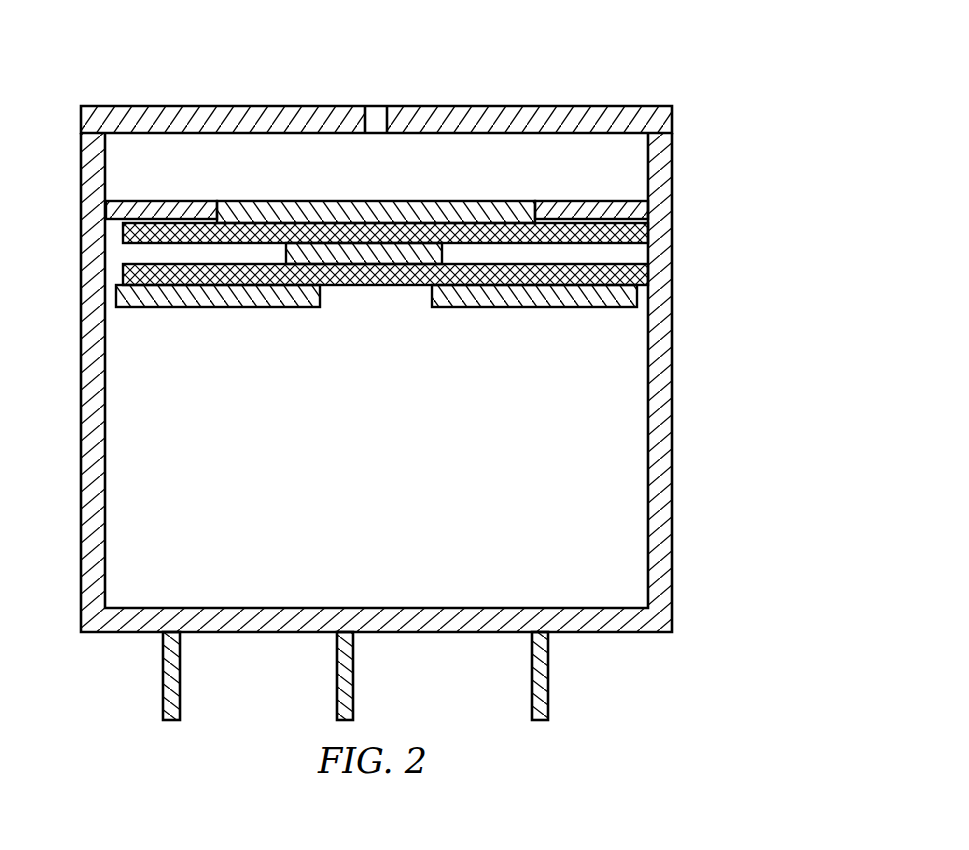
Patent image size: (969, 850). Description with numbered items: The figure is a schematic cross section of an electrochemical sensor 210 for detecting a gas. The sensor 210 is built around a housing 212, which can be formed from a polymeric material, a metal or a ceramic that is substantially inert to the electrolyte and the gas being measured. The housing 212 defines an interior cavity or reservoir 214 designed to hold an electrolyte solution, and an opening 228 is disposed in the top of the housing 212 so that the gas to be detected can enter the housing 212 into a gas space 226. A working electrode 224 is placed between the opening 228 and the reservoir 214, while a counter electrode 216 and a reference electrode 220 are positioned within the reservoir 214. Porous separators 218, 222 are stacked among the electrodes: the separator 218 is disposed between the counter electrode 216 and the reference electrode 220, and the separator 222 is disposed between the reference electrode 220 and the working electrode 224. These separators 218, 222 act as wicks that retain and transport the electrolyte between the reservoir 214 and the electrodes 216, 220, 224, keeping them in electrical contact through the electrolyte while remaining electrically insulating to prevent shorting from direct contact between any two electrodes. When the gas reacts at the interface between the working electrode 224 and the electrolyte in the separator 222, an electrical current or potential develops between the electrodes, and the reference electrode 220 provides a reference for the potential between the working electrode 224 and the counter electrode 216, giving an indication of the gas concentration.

The electrochemical sensor 210 is at (617, 36).
The housing 212 is at (106, 633).
The reservoir 214 is at (383, 512).
The counter electrode 216 is at (238, 308).
The separator 218 is at (124, 269).
The reference electrode 220 is at (400, 258).
The separator 222 is at (124, 229).
The working electrode 224 is at (253, 200).
The gas space 226 is at (383, 176).
The opening 228 is at (376, 118).